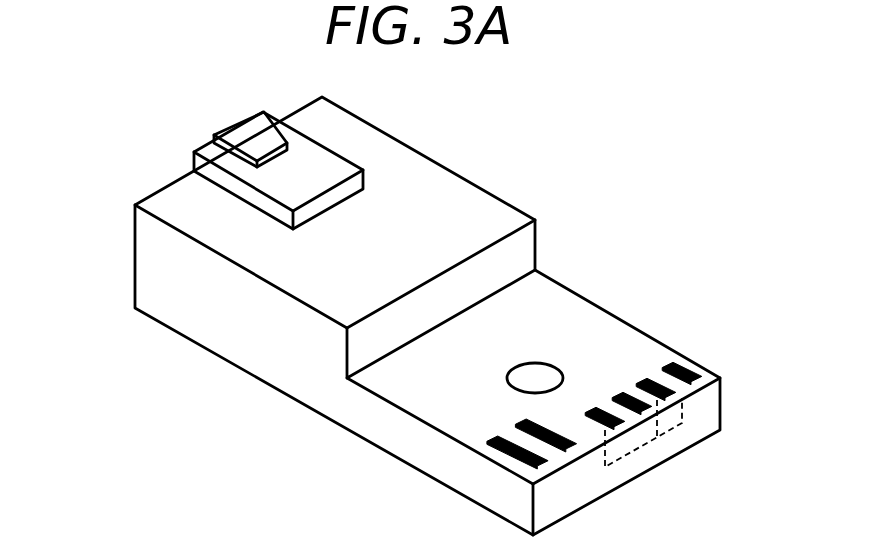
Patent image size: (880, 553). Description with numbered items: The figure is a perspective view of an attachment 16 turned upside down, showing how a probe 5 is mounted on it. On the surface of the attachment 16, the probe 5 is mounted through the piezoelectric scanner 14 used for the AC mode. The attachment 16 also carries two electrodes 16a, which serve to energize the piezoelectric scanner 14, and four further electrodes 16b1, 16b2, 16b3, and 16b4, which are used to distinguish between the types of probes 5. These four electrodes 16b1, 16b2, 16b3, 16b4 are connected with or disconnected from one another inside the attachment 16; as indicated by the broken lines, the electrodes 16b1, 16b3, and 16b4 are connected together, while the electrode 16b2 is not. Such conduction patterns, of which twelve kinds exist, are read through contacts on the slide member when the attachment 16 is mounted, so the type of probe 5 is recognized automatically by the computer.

The probe 5 is at (243, 88).
The piezoelectric scanner 14 is at (210, 149).
The attachment 16 is at (148, 262).
The electrodes 16a is at (548, 462).
The electrode 16b1 is at (592, 407).
The electrode 16b2 is at (623, 393).
The electrode 16b3 is at (650, 380).
The electrode 16b4 is at (690, 364).